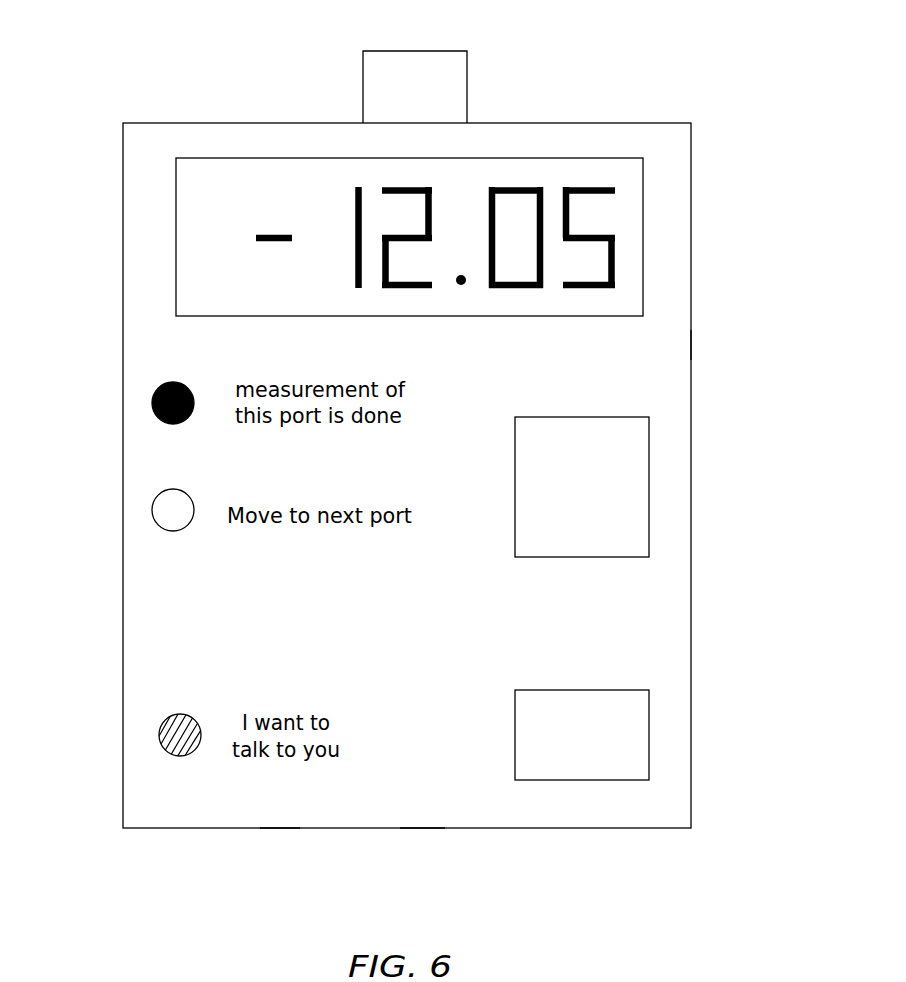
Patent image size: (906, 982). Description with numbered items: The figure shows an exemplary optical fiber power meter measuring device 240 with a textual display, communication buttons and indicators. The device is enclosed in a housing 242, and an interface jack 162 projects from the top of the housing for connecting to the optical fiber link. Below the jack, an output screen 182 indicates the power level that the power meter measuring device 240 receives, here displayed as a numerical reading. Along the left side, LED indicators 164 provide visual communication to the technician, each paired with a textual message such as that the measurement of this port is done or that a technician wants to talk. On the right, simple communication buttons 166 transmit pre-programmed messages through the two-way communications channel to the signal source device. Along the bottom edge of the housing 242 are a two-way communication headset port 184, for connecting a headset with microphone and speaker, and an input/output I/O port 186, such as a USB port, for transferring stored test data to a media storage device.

The interface jack 162 is at (433, 51).
The output screen 182 is at (176, 243).
The LED indicators 164 is at (152, 402).
The communication buttons 166 is at (649, 467).
The housing 242 is at (691, 343).
The power meter measuring device 240 is at (165, 892).
The two-way communication headset port 184 is at (280, 845).
The input/output I/O port 186 is at (424, 845).